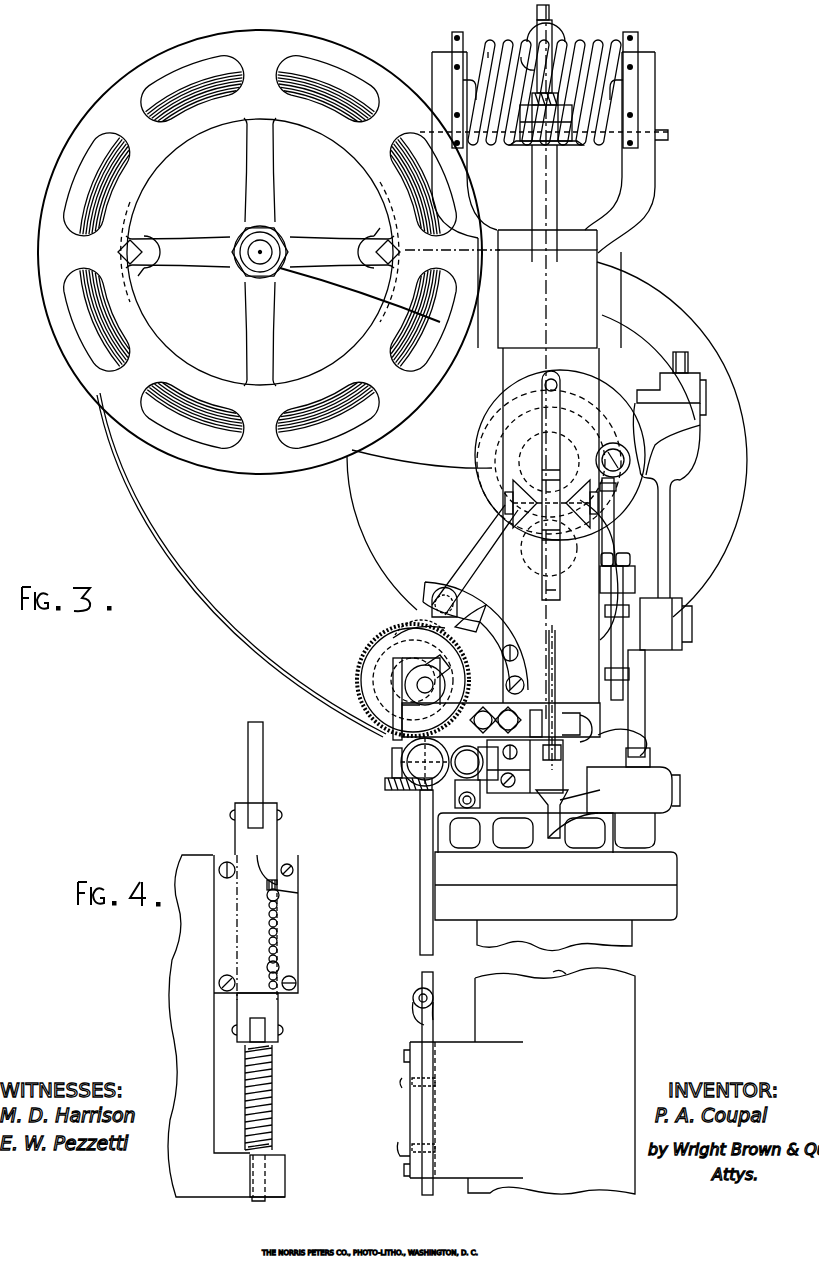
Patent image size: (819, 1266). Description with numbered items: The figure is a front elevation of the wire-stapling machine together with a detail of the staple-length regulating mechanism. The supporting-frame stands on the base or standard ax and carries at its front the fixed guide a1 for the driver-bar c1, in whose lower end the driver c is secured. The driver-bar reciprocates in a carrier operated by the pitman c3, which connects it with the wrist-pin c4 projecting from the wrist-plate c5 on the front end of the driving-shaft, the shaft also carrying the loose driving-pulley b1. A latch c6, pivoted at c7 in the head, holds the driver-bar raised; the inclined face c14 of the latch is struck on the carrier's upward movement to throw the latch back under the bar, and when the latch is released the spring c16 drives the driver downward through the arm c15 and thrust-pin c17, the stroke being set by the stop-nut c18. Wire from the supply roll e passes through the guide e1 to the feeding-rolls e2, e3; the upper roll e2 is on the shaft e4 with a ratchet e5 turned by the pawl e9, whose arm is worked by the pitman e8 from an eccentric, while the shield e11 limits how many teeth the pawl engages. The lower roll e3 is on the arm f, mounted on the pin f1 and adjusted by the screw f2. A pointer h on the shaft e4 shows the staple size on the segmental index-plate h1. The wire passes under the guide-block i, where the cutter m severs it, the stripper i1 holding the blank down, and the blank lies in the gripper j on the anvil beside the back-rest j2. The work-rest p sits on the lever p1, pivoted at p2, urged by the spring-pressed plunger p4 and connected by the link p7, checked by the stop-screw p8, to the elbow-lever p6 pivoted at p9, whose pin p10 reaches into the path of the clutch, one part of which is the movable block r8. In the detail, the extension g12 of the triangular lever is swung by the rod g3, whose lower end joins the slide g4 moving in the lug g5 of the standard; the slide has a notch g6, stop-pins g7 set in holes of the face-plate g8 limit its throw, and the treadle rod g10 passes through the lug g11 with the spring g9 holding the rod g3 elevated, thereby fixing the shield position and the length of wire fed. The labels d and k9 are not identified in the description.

In FIG. 3, the wire-supply roll e is at (214, 380).
In FIG. 3, the fixed guide a1 is at (585, 282).
In FIG. 3, the spring c16 is at (592, 52).
In FIG. 3, the cam or inclined face of the latch c14 is at (493, 55).
In FIG. 3, the thrust-pin c17 is at (524, 48).
In FIG. 3, the arm c15 is at (552, 20).
In FIG. 3, the stop-nut c18 is at (542, 135).
In FIG. 3, the driver-bar c1 is at (555, 186).
In FIG. 3, the driving-pulley b1 is at (662, 318).
In FIG. 3, the wrist-plate c5 is at (590, 438).
In FIG. 3, the driver c is at (549, 485).
In FIG. 3, the latch c6 is at (512, 490).
In FIG. 3, the latch pivot c7 is at (505, 505).
In FIG. 3, the wrist-pin c4 is at (632, 459).
In FIG. 3, the rod or pitman c3 is at (614, 490).
In FIG. 3, the movable block r8 is at (655, 393).
In FIG. 3, the pin p10 is at (653, 420).
In FIG. 3, the elbow-lever p6 is at (662, 560).
In FIG. 3, the adjustable stop-screw p8 is at (628, 566).
In FIG. 3, the elbow-lever pivot p9 is at (690, 636).
In FIG. 3, the link p7 is at (648, 688).
In FIG. 3, the segmental index-plate h1 is at (460, 600).
In FIG. 3, the pitman e8 is at (480, 535).
In FIG. 3, the pointer h is at (500, 622).
In FIG. 3, the pawl e9 is at (432, 610).
In FIG. 3, the upper feeding-roll e2 is at (380, 688).
In FIG. 3, the ratchet e5 is at (393, 648).
In FIG. 3, the curved plate or shield e11 is at (402, 633).
In FIG. 3, the shaft e4 is at (446, 685).
In FIG. 3, the guide e1 is at (398, 738).
In FIG. 3, the guide-block i is at (533, 700).
In FIG. 3, the cutter m is at (549, 700).
In FIG. 3, the top rest or stripper i1 is at (548, 722).
In FIG. 3, the gripper j is at (577, 722).
In FIG. 3, the back-rest j2 is at (645, 745).
In FIG. 3, the lower feeding-roll e3 is at (400, 768).
In FIG. 3, the arm f is at (460, 776).
In FIG. 3, the adjusting-screw f2 is at (404, 792).
In FIG. 3, the pin f1 is at (470, 800).
In FIG. 3, the stud k9 is at (473, 812).
In FIG. 3, the work-rest p is at (560, 830).
In FIG. 3, the lever p1 is at (548, 820).
In FIG. 3, the lever d is at (600, 778).
In FIG. 3, the lever pivot p2 is at (682, 788).
In FIG. 3, the plunger p4 is at (658, 845).
In FIG. 3, the base or standard ax is at (636, 1016).
In FIG. 4, the base or standard ax is at (226, 1026).
In FIG. 3, the extension g12 is at (420, 840).
In FIG. 3, the rod g3 is at (414, 1044).
In FIG. 4, the rod g3 is at (264, 748).
In FIG. 3, the slide g4 is at (412, 1020).
In FIG. 4, the slide g4 is at (265, 838).
In FIG. 3, the stop-pins g7 is at (404, 1084).
In FIG. 4, the stop-pins g7 is at (280, 898).
In FIG. 3, the face-plate g8 is at (406, 1130).
In FIG. 4, the face-plate g8 is at (258, 1000).
In FIG. 3, the rod g10 is at (402, 1152).
In FIG. 4, the rod g10 is at (272, 1146).
In FIG. 4, the lug or projection g5 is at (292, 948).
In FIG. 4, the elongated notch g6 is at (280, 886).
In FIG. 4, the spring g9 is at (272, 1110).
In FIG. 4, the lug g11 is at (285, 1175).